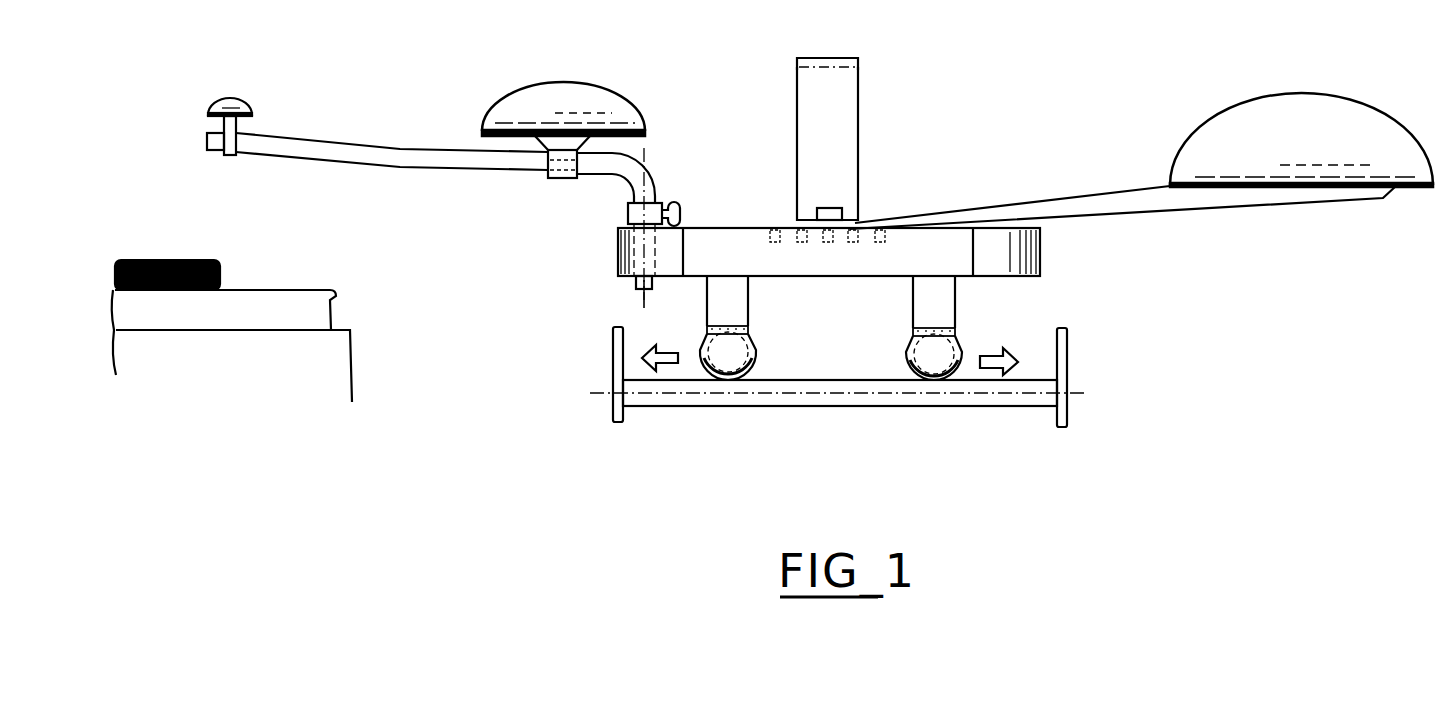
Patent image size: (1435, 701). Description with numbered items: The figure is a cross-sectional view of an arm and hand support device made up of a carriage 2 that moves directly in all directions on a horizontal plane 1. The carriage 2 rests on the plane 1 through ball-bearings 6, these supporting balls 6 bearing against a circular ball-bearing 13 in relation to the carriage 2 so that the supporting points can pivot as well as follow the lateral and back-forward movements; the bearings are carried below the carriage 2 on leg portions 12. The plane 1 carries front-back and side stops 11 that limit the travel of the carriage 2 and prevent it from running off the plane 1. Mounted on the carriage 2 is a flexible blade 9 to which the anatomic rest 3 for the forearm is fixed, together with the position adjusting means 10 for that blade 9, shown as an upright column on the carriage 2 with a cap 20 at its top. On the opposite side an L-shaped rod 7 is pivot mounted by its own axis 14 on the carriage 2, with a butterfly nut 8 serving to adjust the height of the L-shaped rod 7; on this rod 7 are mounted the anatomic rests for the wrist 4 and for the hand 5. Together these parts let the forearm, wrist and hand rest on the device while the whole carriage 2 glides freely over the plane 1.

The horizontal plane 1 is at (835, 404).
The carriage 2 is at (1040, 256).
The anatomic rest of the forearm 3 is at (1301, 140).
The anatomic rest for the wrist 4 is at (563, 130).
The anatomic rest for the hand 5 is at (231, 97).
The ball-bearings 6 is at (955, 381).
The L-shaped rod 7 is at (474, 167).
The butterfly nut 8 is at (662, 200).
The flexible blade 9 is at (1035, 203).
The position adjusting means 10 is at (850, 188).
The front-back and side stops 11 is at (1067, 374).
The legs 12 is at (945, 300).
The circular ball-bearing 13 is at (913, 332).
The axis 14 is at (644, 305).
The means for holding the forearms 20 is at (858, 93).